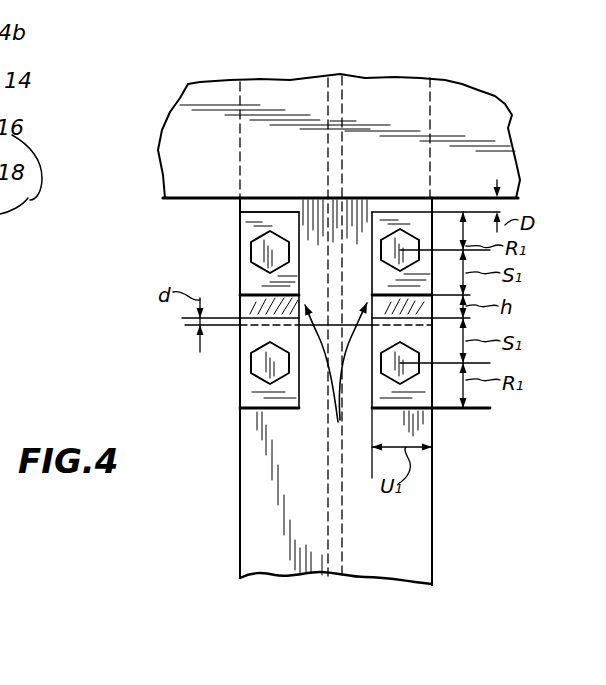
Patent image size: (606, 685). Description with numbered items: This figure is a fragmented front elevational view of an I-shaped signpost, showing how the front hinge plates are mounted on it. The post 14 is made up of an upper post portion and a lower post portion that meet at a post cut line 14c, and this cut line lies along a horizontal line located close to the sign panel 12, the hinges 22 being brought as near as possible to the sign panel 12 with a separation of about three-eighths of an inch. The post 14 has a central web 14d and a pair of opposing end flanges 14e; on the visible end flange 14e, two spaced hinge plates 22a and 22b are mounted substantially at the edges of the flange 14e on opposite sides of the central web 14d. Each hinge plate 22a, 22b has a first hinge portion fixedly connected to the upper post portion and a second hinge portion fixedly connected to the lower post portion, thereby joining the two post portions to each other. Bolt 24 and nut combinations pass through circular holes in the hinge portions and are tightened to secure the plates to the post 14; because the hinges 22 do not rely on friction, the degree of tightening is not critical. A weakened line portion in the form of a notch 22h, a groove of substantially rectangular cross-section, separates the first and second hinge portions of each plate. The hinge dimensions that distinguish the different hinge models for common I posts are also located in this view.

The sign panel 12 is at (190, 90).
The post 14 is at (292, 579).
The post cut line 14c is at (342, 322).
The central web 14d is at (335, 548).
The end flange 14e is at (419, 572).
The hinge 22 is at (170, 358).
The hinge plate 22a is at (232, 226).
The hinge plate 22b is at (442, 418).
The notch 22h is at (338, 404).
The bolt 24 is at (268, 241).